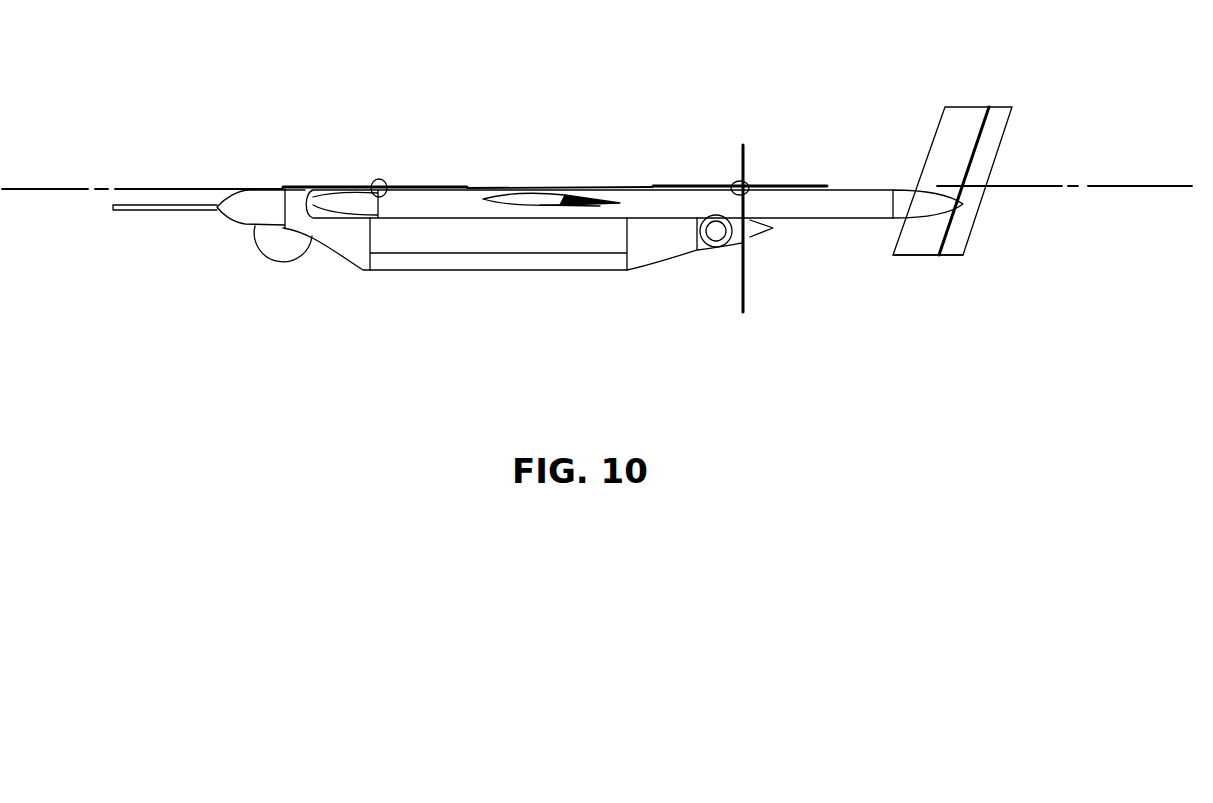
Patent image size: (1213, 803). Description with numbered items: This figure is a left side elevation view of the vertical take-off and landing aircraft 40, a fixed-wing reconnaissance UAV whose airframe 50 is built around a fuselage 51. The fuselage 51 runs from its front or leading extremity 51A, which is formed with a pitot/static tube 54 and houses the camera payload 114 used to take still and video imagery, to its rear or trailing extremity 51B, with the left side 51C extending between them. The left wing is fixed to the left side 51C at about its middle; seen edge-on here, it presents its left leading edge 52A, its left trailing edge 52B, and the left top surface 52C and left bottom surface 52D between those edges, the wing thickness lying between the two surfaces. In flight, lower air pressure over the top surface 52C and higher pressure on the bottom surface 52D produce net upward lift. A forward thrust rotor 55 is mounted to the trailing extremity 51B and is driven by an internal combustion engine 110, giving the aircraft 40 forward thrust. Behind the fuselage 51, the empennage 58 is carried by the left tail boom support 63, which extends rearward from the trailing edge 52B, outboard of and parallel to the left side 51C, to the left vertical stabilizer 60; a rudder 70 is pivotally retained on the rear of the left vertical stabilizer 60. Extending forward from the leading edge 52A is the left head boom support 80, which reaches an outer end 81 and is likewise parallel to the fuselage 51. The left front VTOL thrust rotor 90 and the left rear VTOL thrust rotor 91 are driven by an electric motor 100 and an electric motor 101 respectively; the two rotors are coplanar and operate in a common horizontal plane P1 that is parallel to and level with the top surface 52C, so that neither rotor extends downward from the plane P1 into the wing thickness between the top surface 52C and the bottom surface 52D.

The common horizontal plane P1 is at (155, 187).
The vertical take-off and landing aircraft 40 is at (327, 82).
The airframe 50 is at (367, 271).
The fuselage 51 is at (465, 268).
The leading extremity of fuselage 51A is at (224, 222).
The trailing extremity of fuselage 51B is at (695, 261).
The left side of fuselage 51C is at (542, 247).
The left leading edge 52A is at (478, 197).
The left trailing edge 52B is at (625, 198).
The left top surface 52C is at (541, 190).
The left bottom surface 52D is at (560, 204).
The pitot/static tube 54 is at (137, 211).
The forward thrust rotor 55 is at (750, 160).
The empennage 58 is at (978, 105).
The left vertical stabilizer 60 is at (973, 128).
The left tail boom support 63 is at (866, 200).
The rudder 70 is at (993, 147).
The left head boom support 80 is at (357, 197).
The outer end of left head boom support 81 is at (312, 187).
The left front VTOL thrust rotor 90 is at (427, 188).
The left rear VTOL thrust rotor 91 is at (803, 183).
The electric motor 100 is at (388, 197).
The electric motor 101 is at (748, 186).
The internal combustion engine 110 is at (716, 214).
The camera payload 114 is at (283, 268).